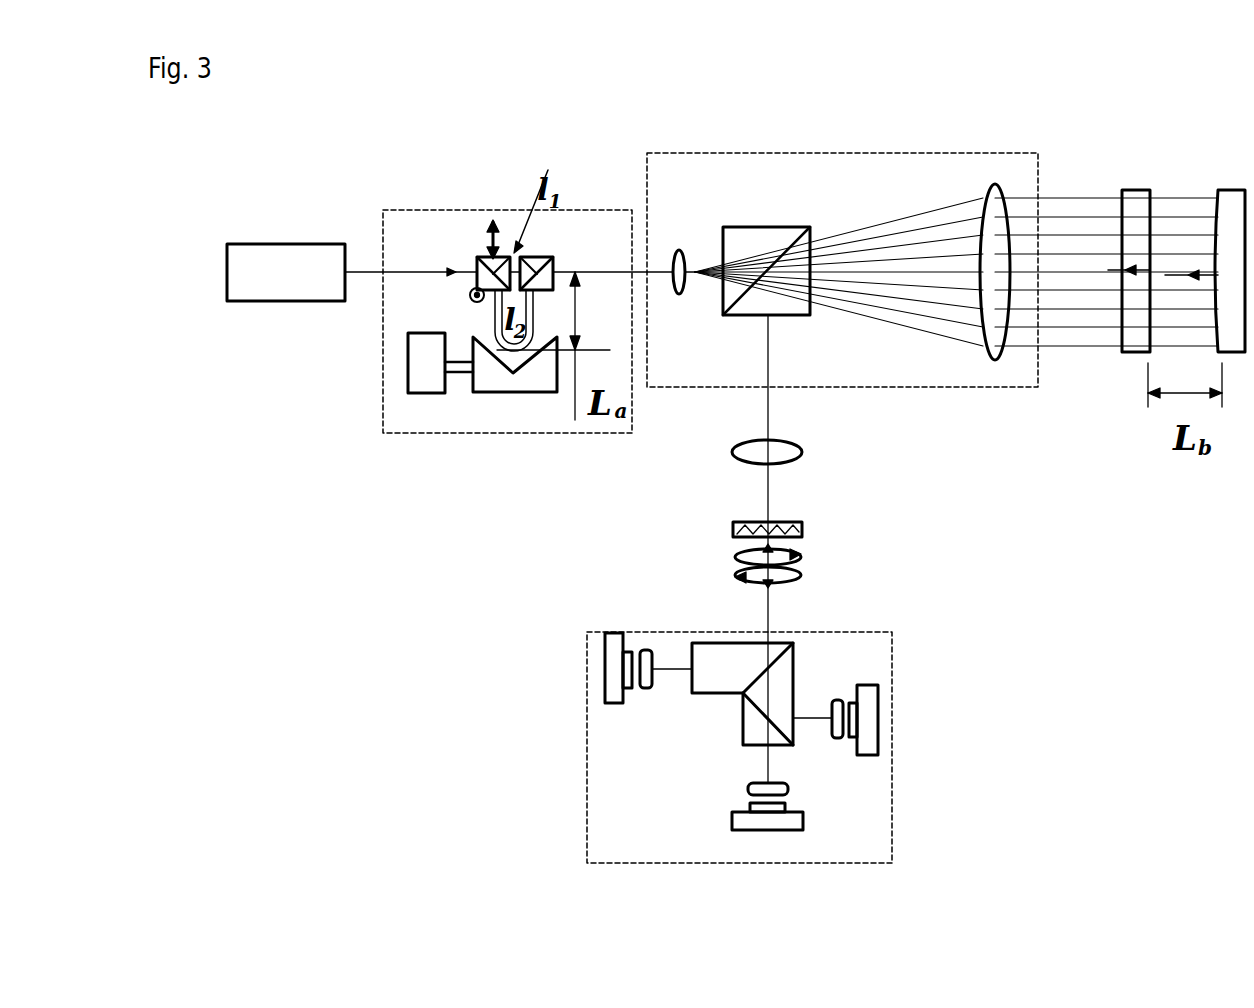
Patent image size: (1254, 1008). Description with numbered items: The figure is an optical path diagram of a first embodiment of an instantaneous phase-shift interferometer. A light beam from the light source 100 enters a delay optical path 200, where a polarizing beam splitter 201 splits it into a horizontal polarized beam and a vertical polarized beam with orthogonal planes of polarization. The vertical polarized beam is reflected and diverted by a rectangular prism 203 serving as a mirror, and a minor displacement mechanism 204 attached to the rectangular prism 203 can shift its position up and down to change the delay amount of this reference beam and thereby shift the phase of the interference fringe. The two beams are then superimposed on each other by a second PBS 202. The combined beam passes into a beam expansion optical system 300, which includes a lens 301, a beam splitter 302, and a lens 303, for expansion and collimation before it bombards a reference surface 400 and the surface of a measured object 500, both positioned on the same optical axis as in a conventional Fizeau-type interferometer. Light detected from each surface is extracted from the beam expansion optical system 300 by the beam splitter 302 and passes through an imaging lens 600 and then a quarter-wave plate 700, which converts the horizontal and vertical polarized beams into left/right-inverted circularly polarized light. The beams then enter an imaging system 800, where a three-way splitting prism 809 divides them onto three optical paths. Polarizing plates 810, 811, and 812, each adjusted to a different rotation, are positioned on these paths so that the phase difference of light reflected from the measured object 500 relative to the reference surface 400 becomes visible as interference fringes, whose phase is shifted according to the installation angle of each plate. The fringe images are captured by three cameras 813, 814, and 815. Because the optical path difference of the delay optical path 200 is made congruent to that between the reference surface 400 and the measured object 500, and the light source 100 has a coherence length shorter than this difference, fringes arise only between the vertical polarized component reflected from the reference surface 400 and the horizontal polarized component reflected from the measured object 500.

The light source 100 is at (260, 261).
The delay optical path 200 is at (385, 208).
The polarizing beam splitter 201 is at (478, 263).
The PBS 202 is at (553, 263).
The rectangular prism 203 is at (475, 392).
The minor displacement mechanism 204 is at (403, 342).
The beam expansion optical system 300 is at (647, 153).
The lens 301 is at (675, 261).
The beam splitter 302 is at (750, 229).
The lens 303 is at (991, 192).
The reference surface 400 is at (1135, 190).
The measured object 500 is at (1231, 190).
The imaging lens 600 is at (803, 452).
The λ/4 plate 700 is at (803, 530).
The imaging system 800 is at (826, 630).
The three-way splitting prism 809 is at (753, 723).
The polarizing plate 810 is at (648, 650).
The polarizing plate 811 is at (748, 789).
The polarizing plate 812 is at (837, 700).
The camera 813 is at (612, 694).
The camera 814 is at (735, 819).
The camera 815 is at (869, 756).